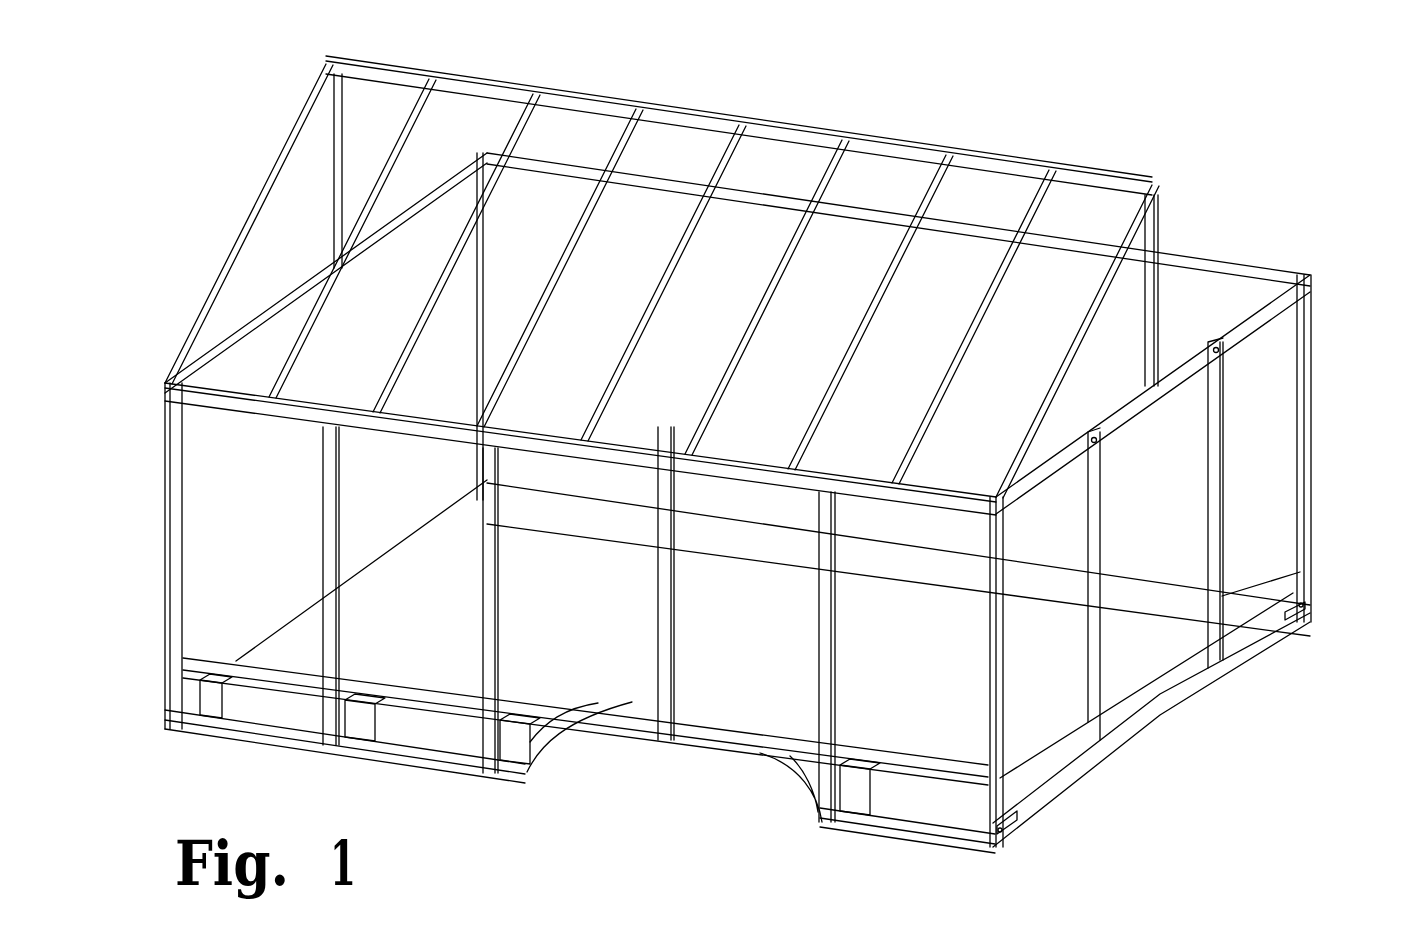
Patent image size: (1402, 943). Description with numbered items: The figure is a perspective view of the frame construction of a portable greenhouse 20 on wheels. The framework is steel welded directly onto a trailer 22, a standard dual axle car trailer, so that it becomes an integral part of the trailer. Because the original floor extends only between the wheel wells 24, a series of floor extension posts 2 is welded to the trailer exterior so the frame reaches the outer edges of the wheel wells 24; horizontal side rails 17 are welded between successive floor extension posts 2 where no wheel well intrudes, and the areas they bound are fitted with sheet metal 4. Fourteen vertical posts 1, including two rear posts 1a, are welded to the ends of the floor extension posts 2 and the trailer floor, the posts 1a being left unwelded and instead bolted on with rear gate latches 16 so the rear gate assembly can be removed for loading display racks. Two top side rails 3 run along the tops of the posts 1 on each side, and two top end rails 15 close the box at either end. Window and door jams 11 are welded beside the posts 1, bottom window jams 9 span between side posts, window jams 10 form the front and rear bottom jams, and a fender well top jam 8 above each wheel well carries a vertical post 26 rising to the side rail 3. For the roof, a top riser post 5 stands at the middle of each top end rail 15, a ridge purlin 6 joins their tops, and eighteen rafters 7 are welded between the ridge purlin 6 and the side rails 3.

The vertical post 1 is at (1313, 385).
The rear vertical post 1a is at (1206, 481).
The floor extension post 2 is at (503, 768).
The top side rail 3 is at (1243, 265).
The sheet metal 4 is at (248, 714).
The top riser post 5 is at (1160, 220).
The ridge purlin 6 is at (1081, 166).
The rafter 7 is at (286, 144).
The fender well top jam 8 is at (708, 746).
The bottom window jam 9 is at (861, 754).
The window jam 10 is at (1055, 745).
The window and door jam 11 is at (839, 652).
The top end rail 15 is at (1265, 312).
The rear gate latch 16 is at (1221, 366).
The horizontal side rail 17 is at (437, 770).
The portable greenhouse 20 is at (1317, 105).
The trailer 22 is at (403, 537).
The wheel well 24 is at (640, 800).
The vertical post 26 is at (675, 652).